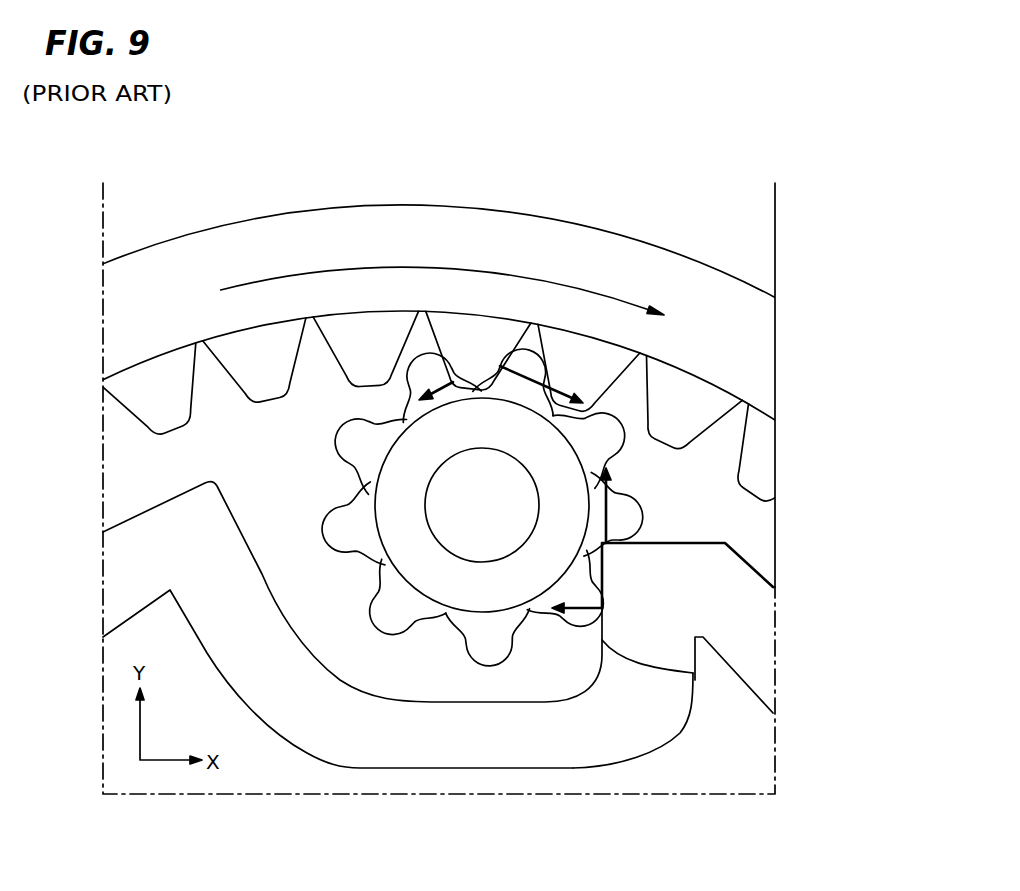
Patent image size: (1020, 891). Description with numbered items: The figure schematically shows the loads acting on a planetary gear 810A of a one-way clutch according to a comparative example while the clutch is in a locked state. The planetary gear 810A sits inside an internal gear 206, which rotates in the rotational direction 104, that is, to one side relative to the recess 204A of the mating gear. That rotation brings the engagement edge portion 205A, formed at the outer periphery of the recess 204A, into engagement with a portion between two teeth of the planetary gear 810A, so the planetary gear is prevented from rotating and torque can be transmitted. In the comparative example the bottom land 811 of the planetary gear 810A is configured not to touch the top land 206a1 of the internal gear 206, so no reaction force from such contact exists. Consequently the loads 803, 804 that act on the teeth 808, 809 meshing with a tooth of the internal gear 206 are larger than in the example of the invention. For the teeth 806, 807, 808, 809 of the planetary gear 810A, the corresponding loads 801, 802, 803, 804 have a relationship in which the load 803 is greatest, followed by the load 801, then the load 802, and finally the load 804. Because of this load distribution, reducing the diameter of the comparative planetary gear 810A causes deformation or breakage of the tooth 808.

The internal gear 206 is at (155, 412).
The top land 206a1 is at (459, 381).
The rotational direction 104 is at (633, 293).
The load 801 is at (632, 512).
The bottom land 811 is at (412, 424).
The tooth 809 is at (420, 370).
The tooth 808 is at (525, 360).
The load 804 is at (428, 368).
The load 803 is at (557, 420).
The tooth 806 is at (634, 522).
The load 802 is at (575, 620).
The recess 204A is at (580, 683).
The engagement edge portion 205A is at (604, 547).
The tooth 807 is at (693, 672).
The planetary gear 810A is at (425, 578).